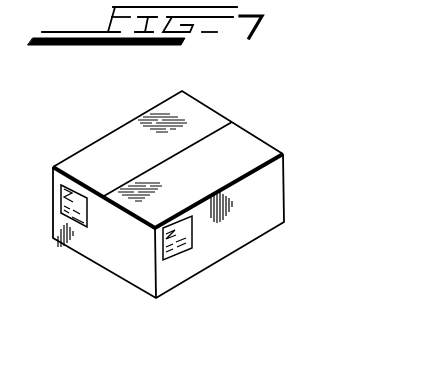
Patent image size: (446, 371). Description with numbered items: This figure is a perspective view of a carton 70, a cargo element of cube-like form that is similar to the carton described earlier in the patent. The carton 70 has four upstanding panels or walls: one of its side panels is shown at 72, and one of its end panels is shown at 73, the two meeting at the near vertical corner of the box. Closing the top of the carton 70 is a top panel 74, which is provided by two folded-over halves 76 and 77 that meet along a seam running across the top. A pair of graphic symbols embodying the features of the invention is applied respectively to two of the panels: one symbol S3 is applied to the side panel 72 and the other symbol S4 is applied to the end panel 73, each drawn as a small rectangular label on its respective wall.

The carton 70 is at (279, 138).
The side panel 72 is at (271, 213).
The end panel 73 is at (137, 265).
The top panel 74 is at (188, 197).
The folded-over half 76 is at (246, 143).
The folded-over half 77 is at (202, 112).
The label on right side wall S3 is at (193, 235).
The label on left side wall S4 is at (81, 216).